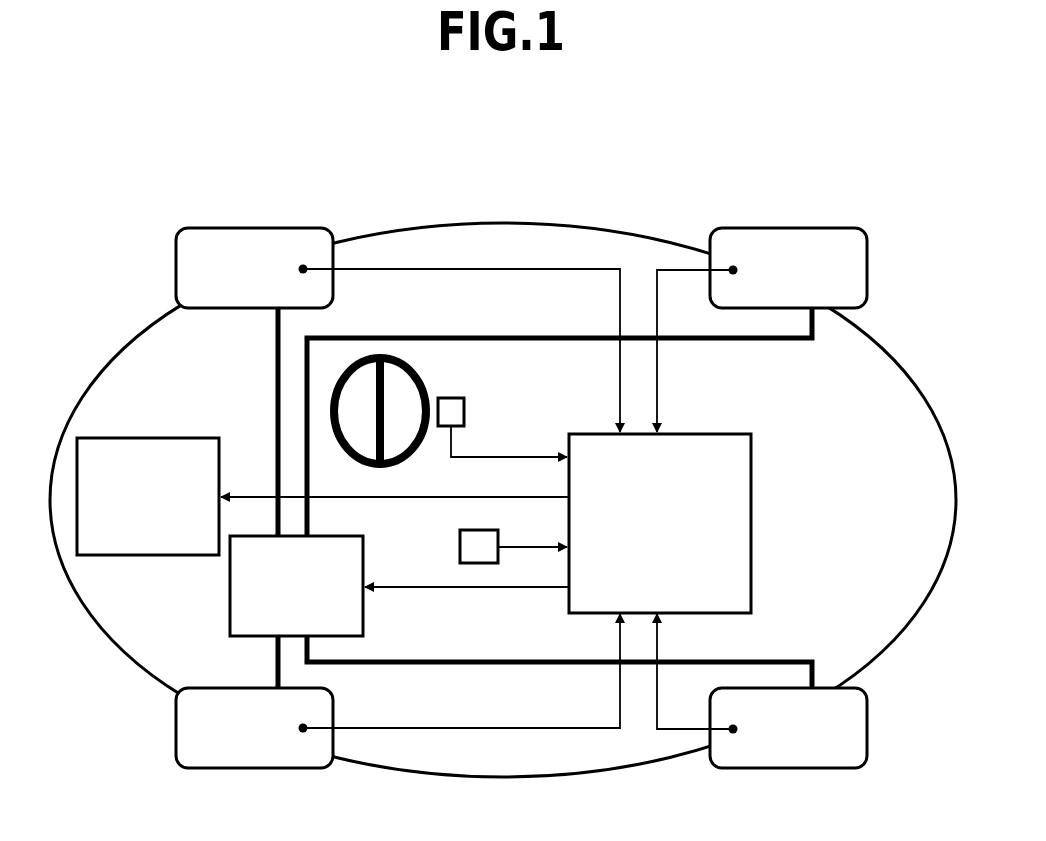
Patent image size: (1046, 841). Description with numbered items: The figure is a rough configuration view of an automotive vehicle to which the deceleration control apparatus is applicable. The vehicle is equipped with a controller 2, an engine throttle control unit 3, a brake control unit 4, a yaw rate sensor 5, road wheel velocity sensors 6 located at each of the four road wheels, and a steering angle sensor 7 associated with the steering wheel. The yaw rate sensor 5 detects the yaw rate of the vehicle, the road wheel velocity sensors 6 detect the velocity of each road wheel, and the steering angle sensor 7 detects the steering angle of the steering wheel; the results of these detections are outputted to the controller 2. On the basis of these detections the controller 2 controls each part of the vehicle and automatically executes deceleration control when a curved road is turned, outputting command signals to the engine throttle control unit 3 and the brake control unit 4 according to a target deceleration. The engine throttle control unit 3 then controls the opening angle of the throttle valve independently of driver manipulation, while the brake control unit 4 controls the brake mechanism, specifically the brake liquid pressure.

The controller 2 is at (751, 480).
The engine throttle control unit 3 is at (172, 438).
The brake control unit 4 is at (230, 600).
The yaw rate sensor 5 is at (460, 547).
The road wheel velocity sensors 6 is at (303, 269).
The steering angle sensor 7 is at (464, 412).